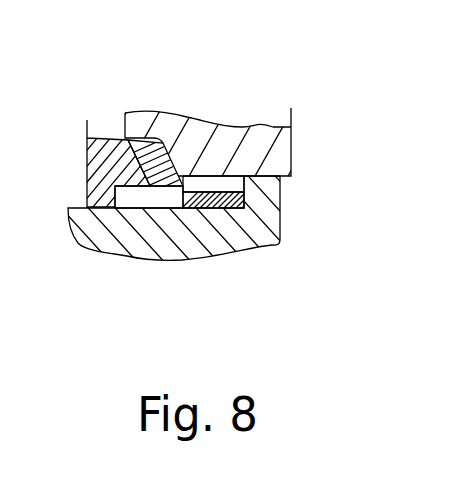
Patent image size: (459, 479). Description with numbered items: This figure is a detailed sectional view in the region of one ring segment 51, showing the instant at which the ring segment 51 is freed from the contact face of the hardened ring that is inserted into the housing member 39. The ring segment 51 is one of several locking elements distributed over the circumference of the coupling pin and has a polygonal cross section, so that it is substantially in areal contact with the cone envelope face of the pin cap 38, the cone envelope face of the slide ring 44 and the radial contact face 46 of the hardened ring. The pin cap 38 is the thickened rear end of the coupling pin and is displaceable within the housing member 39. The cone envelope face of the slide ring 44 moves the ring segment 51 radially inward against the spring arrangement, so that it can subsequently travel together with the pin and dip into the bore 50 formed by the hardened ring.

The pin cap 38 is at (232, 135).
The housing member 39 is at (127, 255).
The slide ring 44 is at (113, 167).
The radial contact face 46 is at (198, 212).
The bore 50 is at (233, 172).
The ring segment 51 is at (160, 140).